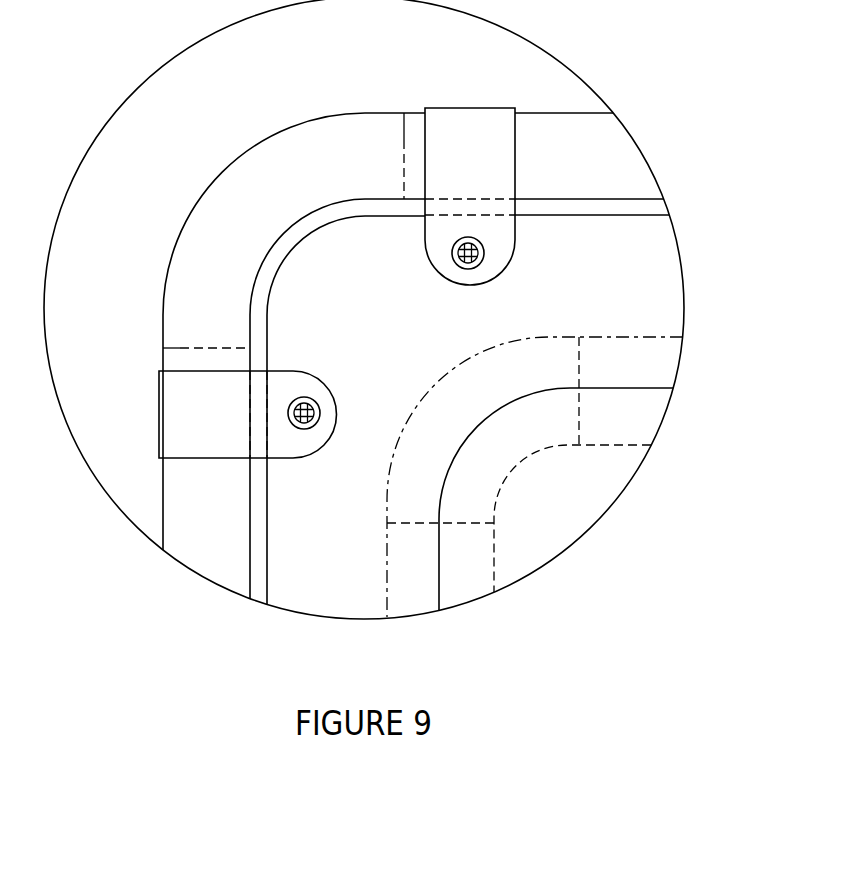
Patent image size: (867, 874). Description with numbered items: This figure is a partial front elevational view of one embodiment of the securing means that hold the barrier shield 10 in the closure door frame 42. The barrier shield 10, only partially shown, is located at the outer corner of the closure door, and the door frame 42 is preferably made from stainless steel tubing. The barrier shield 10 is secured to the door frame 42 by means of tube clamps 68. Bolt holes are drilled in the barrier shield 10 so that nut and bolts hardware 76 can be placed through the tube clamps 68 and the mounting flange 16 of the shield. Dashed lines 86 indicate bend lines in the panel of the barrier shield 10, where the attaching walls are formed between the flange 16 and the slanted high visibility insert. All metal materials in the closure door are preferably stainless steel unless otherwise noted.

The barrier shield 10 is at (378, 327).
The mounting flange 16 is at (668, 282).
The closure door frame 42 is at (188, 268).
The tube clamp 68 is at (478, 118).
The nut and bolts hardware 76 is at (486, 253).
The bend lines 86 is at (676, 390).